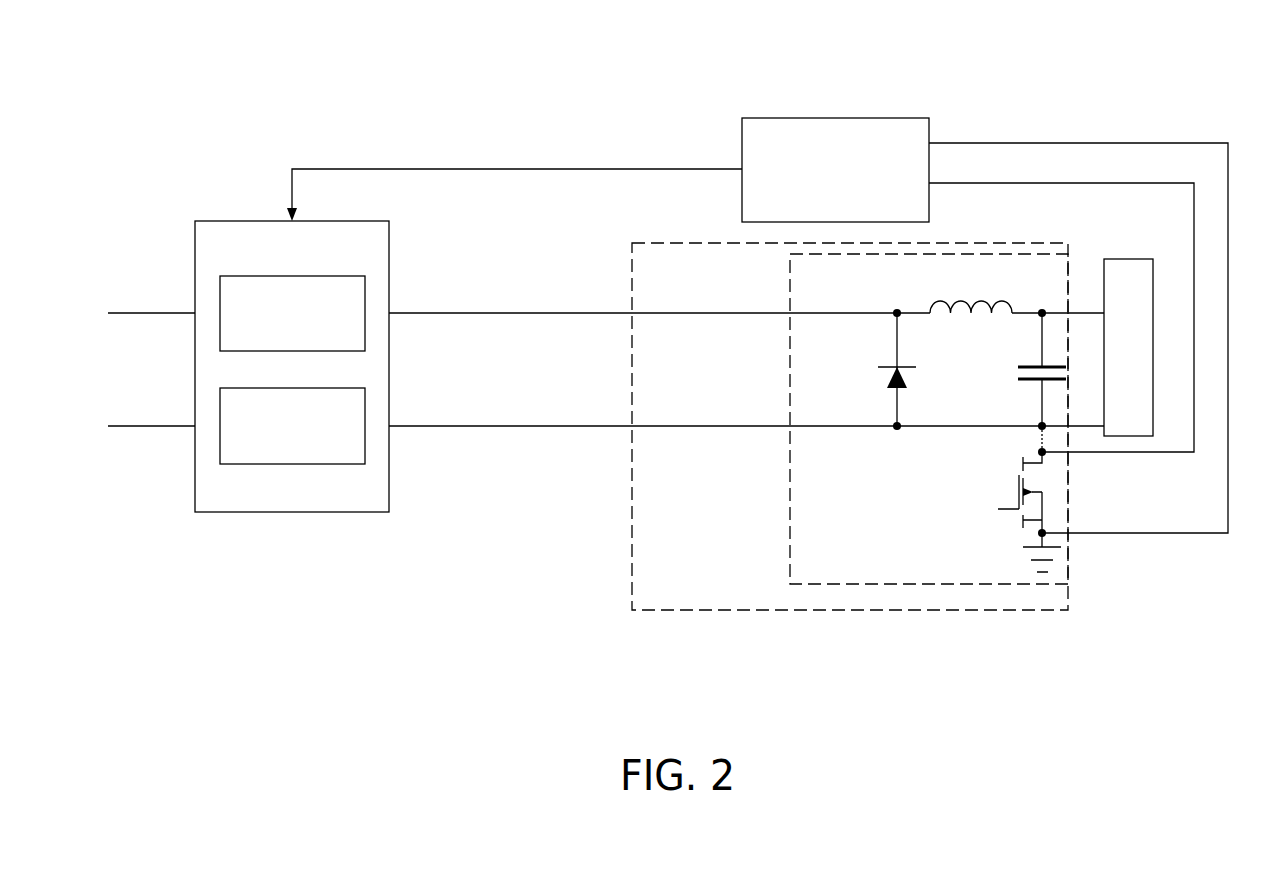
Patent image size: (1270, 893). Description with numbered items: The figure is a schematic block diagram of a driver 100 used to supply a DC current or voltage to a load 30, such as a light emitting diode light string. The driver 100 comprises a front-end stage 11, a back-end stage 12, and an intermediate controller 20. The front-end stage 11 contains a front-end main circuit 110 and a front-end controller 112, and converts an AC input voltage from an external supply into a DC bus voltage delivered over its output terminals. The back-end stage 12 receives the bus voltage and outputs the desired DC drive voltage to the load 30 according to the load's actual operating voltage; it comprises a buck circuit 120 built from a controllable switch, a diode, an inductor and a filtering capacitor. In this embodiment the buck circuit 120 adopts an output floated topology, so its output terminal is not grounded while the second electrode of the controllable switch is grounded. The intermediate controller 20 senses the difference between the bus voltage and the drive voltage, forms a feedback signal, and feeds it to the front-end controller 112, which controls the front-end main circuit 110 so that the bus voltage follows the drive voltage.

The driver 100 is at (293, 69).
The front-end stage 11 is at (338, 221).
The front-end main circuit 110 is at (290, 276).
The front-end controller 112 is at (290, 388).
The intermediate controller 20 is at (835, 118).
The back-end stage 12 is at (983, 243).
The buck circuit 120 is at (790, 283).
The load 30 is at (1120, 259).